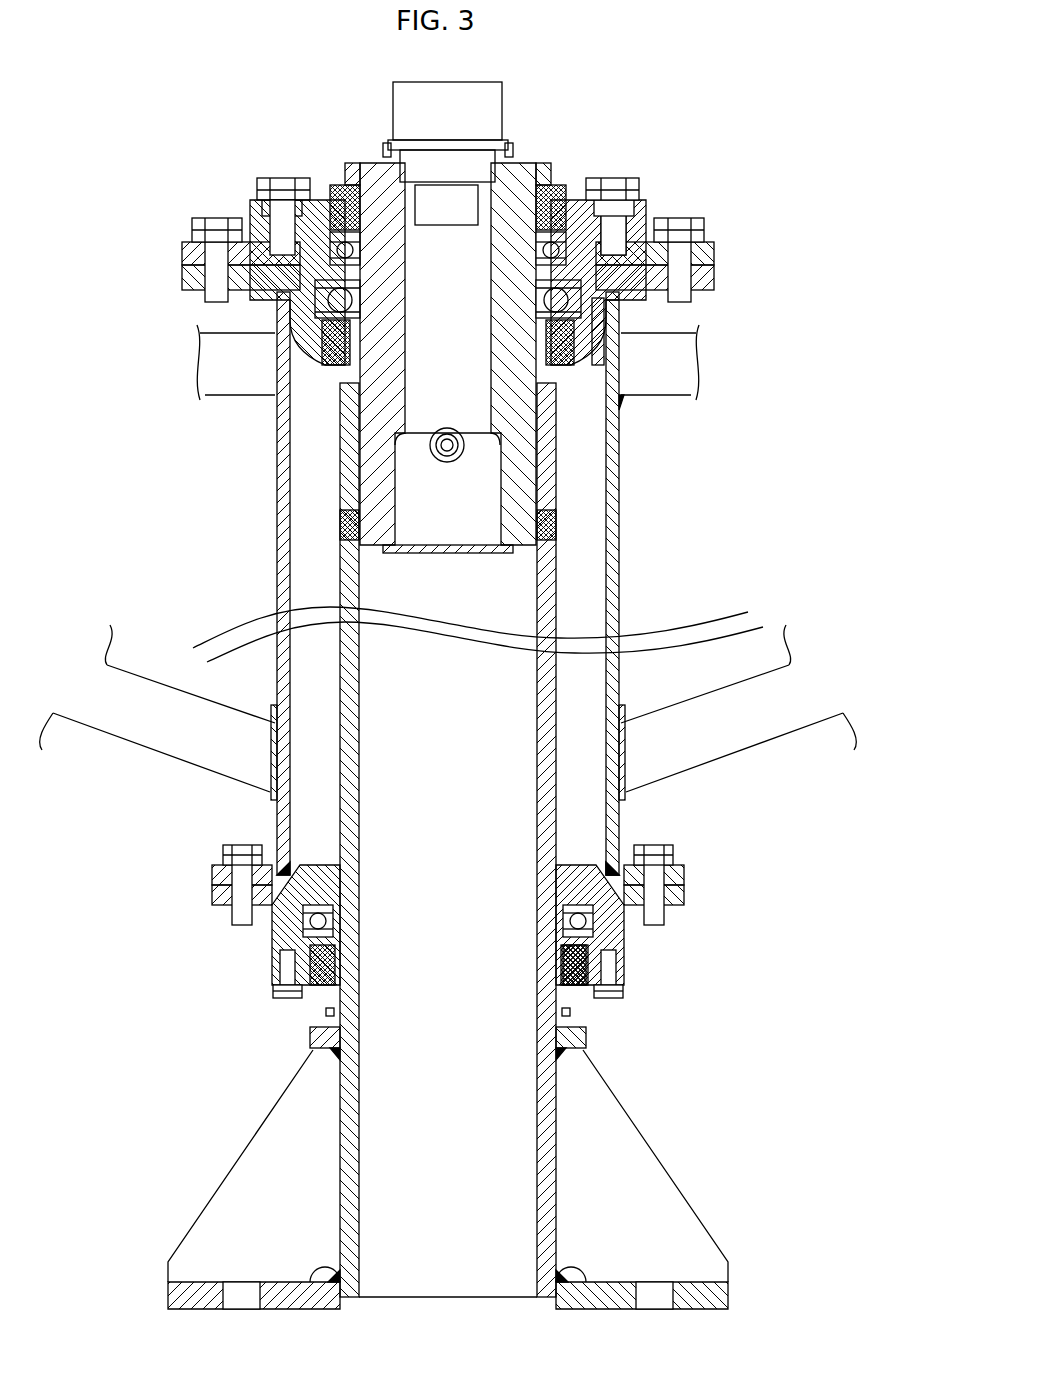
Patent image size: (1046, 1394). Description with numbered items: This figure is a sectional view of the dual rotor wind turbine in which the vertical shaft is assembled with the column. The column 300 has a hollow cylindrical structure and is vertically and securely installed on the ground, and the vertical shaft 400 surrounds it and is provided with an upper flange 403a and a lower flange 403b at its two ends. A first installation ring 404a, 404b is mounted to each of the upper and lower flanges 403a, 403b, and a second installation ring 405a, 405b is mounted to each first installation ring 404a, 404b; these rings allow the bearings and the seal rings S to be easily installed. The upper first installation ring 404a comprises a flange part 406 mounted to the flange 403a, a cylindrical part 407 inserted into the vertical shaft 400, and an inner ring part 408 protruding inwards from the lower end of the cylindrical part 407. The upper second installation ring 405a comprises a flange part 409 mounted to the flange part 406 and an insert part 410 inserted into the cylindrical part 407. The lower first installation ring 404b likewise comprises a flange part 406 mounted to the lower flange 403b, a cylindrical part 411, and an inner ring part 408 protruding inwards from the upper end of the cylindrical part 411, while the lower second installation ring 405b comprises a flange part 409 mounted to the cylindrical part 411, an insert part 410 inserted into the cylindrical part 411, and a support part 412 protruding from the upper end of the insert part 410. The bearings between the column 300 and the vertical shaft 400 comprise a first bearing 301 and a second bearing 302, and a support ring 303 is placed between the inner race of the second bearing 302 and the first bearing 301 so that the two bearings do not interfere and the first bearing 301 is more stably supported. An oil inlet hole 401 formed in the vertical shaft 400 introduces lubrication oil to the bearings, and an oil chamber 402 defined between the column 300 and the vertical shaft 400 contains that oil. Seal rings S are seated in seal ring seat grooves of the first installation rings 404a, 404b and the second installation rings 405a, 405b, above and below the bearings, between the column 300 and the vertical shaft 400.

The column 300 is at (516, 152).
The first bearing 301 is at (344, 198).
The second bearing 302 is at (276, 327).
The support ring 303 is at (620, 297).
The vertical shaft 400 is at (627, 468).
The oil inlet hole 401 is at (268, 214).
The oil chamber 402 is at (284, 293).
The upper flange 403a is at (723, 279).
The lower flange 403b is at (694, 875).
The first installation ring 404a is at (723, 257).
The first installation ring 404b is at (694, 896).
The second installation ring 405a is at (578, 235).
The second installation ring 405b is at (628, 975).
The flange part 406 is at (645, 241).
The cylindrical part 407 is at (622, 330).
The inner ring part 408 is at (616, 404).
The flange part 409 is at (634, 226).
The insert part 410 is at (624, 203).
The cylindrical part 411 is at (623, 950).
The support part 412 is at (578, 984).
The seal ring S is at (562, 194).